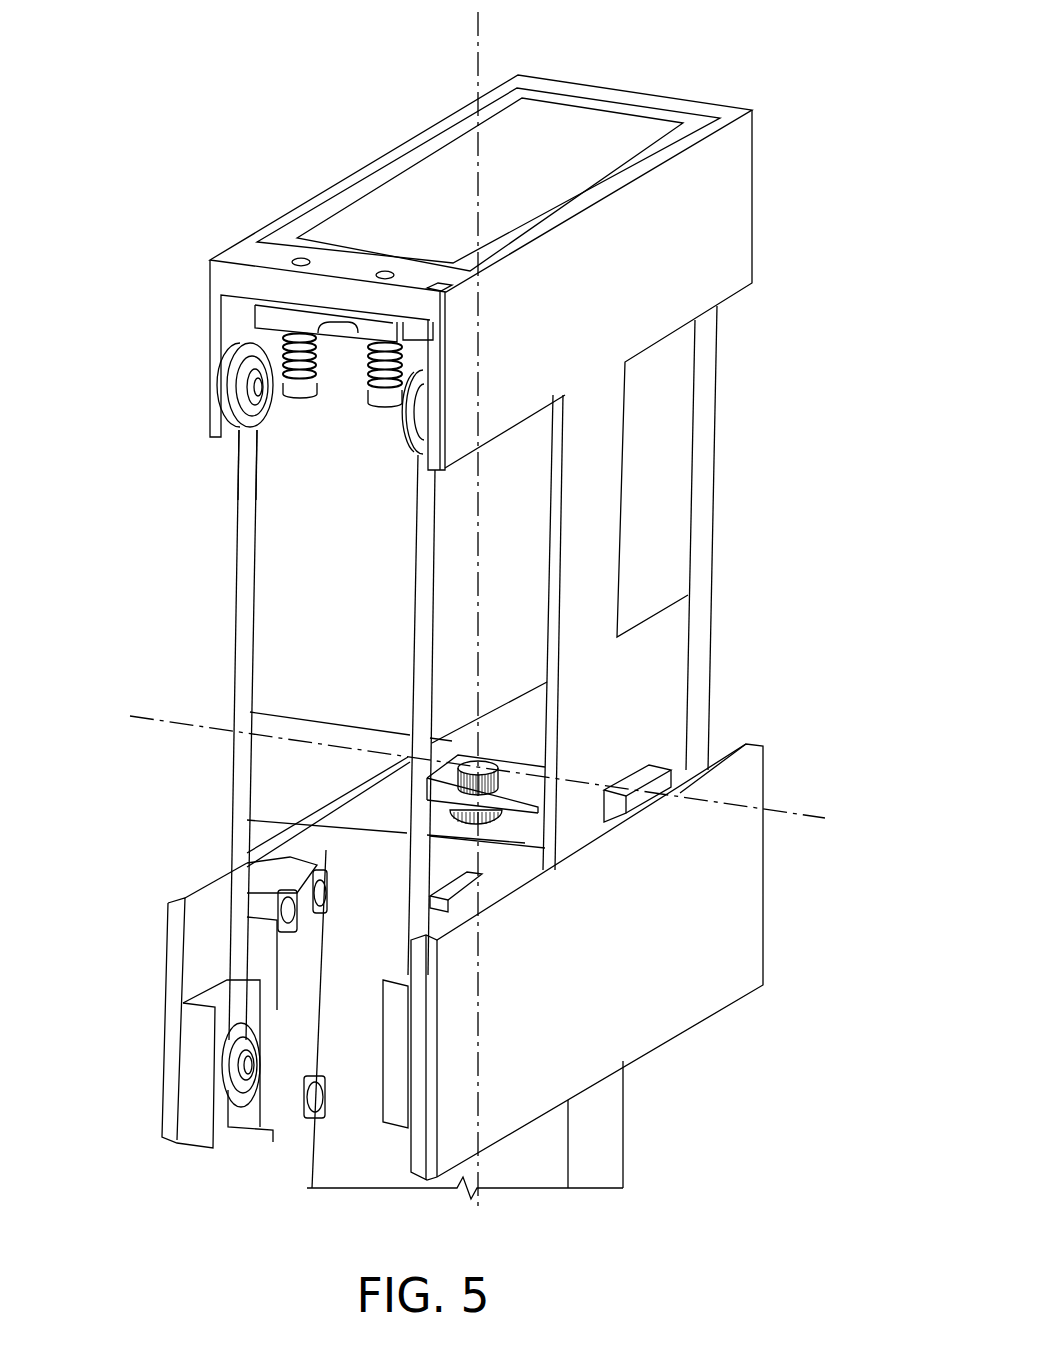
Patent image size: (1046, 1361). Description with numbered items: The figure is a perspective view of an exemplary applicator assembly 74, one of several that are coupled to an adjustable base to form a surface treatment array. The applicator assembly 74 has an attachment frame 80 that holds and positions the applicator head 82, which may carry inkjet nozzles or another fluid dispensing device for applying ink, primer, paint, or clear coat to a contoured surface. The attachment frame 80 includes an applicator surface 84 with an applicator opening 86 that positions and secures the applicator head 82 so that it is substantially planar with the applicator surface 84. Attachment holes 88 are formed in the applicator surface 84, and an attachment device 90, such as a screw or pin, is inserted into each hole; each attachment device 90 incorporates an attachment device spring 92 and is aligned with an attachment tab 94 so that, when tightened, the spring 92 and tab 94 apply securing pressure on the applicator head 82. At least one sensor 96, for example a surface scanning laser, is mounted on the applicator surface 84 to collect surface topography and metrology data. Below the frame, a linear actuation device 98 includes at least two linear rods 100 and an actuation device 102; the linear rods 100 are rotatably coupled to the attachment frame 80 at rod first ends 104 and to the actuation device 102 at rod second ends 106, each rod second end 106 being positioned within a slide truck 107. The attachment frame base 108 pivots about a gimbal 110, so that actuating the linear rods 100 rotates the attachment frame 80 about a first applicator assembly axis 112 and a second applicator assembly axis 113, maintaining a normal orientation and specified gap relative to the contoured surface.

The applicator assembly 74 is at (686, 60).
The attachment frame 80 is at (740, 253).
The applicator head 82 is at (593, 187).
The applicator surface 84 is at (248, 256).
The applicator opening 86 is at (387, 177).
The attachment holes 88 is at (300, 258).
The attachment device 90 is at (243, 468).
The attachment device spring 92 is at (368, 330).
The attachment tab 94 is at (370, 327).
The sensor 96 is at (452, 286).
The linear actuation device 98 is at (172, 1187).
The linear rods 100 is at (246, 680).
The actuation device 102 is at (283, 1097).
The rod first ends 104 is at (250, 407).
The rod second end 106 is at (233, 1088).
The slide truck 107 is at (197, 1068).
The attachment frame base 108 is at (538, 813).
The gimbal 110 is at (562, 822).
The first applicator assembly axis 112 is at (475, 86).
The second applicator assembly axis 113 is at (786, 811).